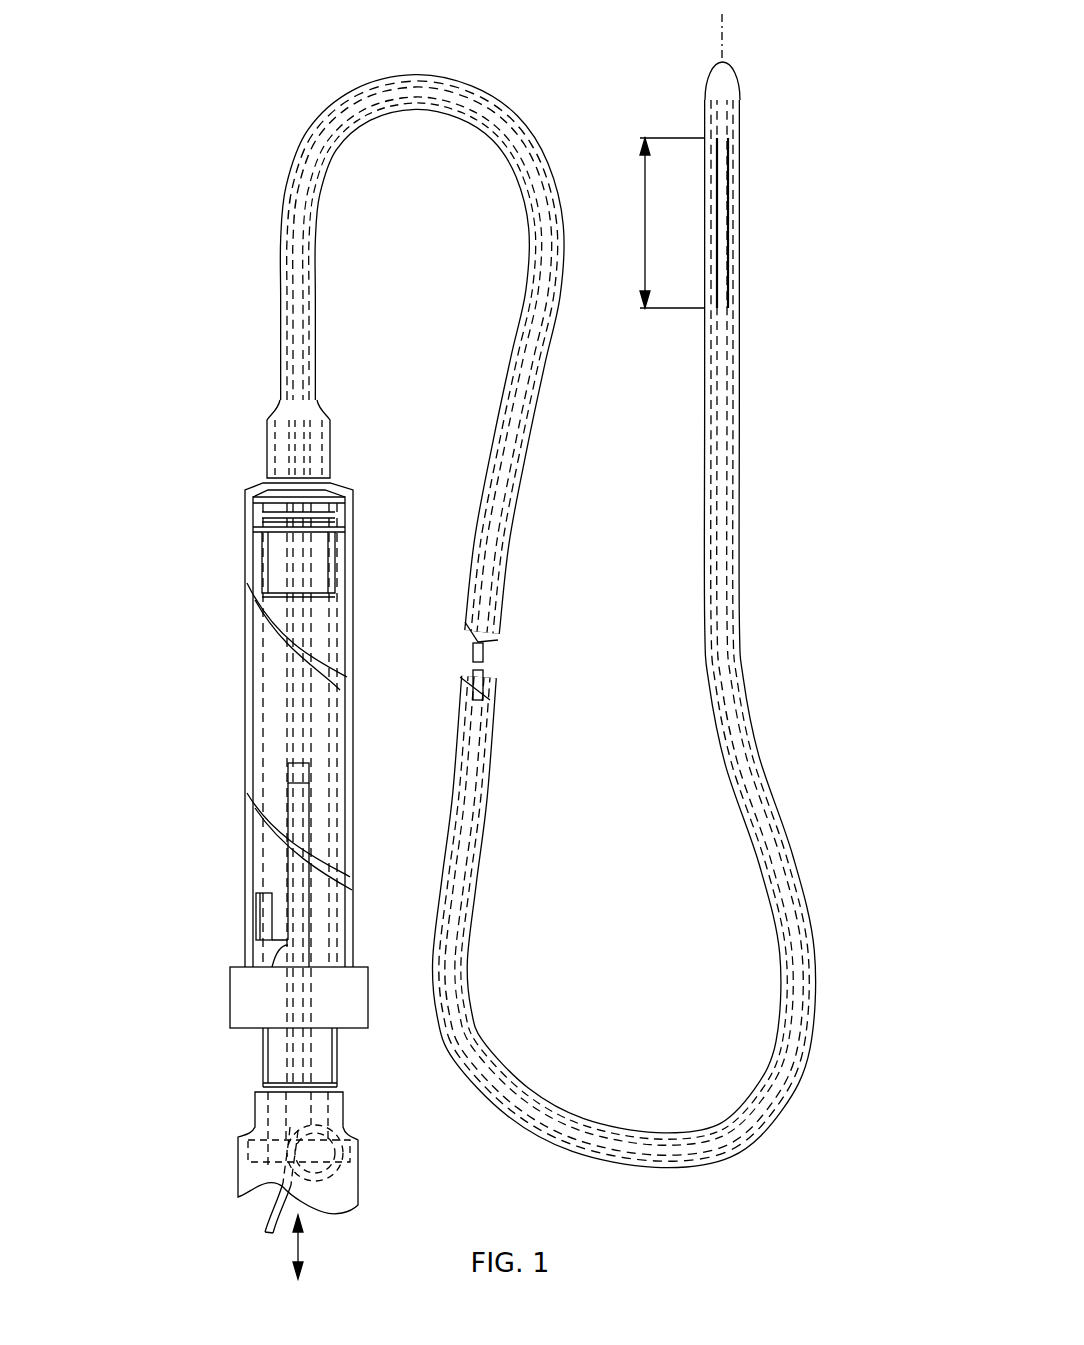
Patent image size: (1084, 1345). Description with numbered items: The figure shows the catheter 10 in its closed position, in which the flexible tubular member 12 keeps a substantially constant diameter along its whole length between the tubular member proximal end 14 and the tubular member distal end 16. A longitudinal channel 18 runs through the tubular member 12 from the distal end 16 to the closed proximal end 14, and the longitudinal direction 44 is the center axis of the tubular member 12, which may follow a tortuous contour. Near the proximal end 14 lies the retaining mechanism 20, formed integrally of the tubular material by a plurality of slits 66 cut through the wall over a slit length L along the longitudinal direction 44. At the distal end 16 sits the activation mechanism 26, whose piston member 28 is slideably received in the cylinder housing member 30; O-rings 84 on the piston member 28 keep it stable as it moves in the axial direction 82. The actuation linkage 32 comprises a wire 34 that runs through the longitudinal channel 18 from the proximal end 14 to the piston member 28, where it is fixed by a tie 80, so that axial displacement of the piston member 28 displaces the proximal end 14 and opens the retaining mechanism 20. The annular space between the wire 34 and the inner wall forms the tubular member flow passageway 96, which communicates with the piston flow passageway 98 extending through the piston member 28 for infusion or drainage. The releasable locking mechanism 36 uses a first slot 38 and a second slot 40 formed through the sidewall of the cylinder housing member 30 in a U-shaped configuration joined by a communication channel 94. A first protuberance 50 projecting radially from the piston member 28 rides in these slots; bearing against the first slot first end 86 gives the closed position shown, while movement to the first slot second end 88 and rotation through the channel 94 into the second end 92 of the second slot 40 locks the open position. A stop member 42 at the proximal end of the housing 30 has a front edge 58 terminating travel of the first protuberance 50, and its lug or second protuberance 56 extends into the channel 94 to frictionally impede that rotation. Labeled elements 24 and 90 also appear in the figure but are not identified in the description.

The catheter 10 is at (186, 390).
The tubular member 12 is at (644, 625).
The tubular member proximal end 14 is at (731, 64).
The tubular member distal end 16 is at (332, 458).
The longitudinal channel 18 is at (482, 770).
The retaining mechanism 20 is at (750, 224).
The tube wall 24 is at (738, 265).
The activation mechanism 26 is at (240, 600).
The piston member 28 is at (334, 572).
The cylinder housing member 30 is at (354, 712).
The actuation linkage 32 is at (486, 685).
The wire 34 is at (486, 655).
The releasable locking mechanism 36 is at (220, 962).
The first slot 38 is at (304, 838).
The second slot 40 is at (262, 915).
The stop member 42 is at (369, 1012).
The longitudinal direction 44 is at (723, 28).
The first protuberance 50 is at (310, 773).
The second protuberance 56 is at (284, 963).
The front edge 58 is at (362, 967).
The slits 66 is at (733, 155).
The tie 80 is at (350, 1145).
The axial direction 82 is at (302, 1240).
The O-rings 84 is at (340, 505).
The first slot first end 86 is at (298, 762).
The first slot second end 88 is at (305, 970).
The latch spring 90 is at (264, 893).
The second end of second slot 92 is at (278, 970).
The communication channel 94 is at (280, 955).
The tubular member flow passageway 96 is at (500, 538).
The piston flow passageway 98 is at (304, 622).